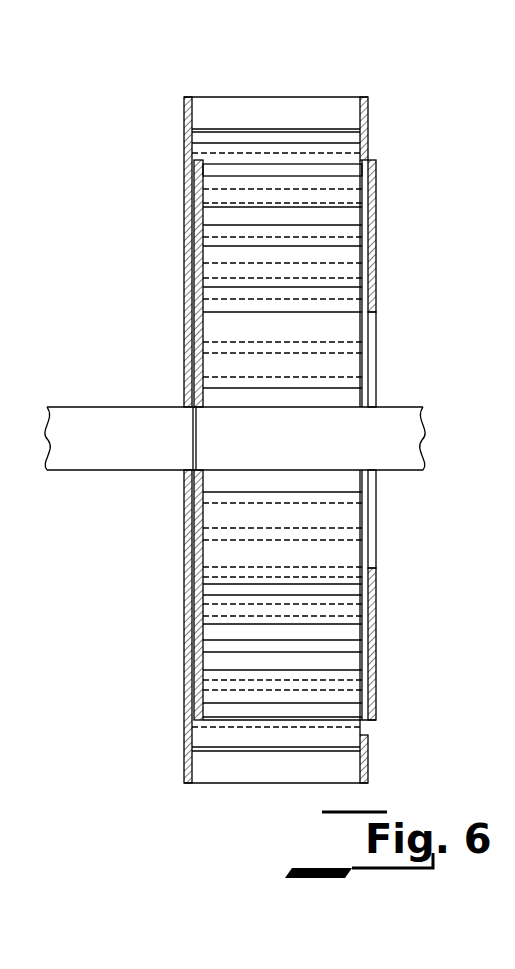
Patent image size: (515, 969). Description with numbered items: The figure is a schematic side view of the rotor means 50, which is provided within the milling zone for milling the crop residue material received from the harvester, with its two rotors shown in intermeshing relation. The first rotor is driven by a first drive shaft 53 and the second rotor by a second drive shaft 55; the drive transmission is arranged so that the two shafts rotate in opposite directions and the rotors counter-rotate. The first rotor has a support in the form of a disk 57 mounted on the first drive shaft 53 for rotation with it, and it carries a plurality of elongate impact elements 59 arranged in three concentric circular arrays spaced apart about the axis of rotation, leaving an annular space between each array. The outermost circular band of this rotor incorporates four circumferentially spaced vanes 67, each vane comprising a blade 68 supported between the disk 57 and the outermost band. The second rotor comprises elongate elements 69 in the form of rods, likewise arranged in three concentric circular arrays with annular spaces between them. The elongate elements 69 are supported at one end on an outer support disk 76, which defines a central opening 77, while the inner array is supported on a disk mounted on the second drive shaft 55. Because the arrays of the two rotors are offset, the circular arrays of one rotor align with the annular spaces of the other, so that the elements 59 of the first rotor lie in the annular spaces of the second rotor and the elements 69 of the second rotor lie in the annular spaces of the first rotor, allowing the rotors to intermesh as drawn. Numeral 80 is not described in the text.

The rotor means 50 is at (275, 88).
The first drive shaft 53 is at (100, 457).
The second drive shaft 55 is at (402, 453).
The disk 57 is at (185, 357).
The elongate impact elements 59 is at (325, 195).
The vanes 67 is at (335, 113).
The blade 68 is at (224, 113).
The elongate elements 69 is at (308, 172).
The outer support disk 76 is at (375, 233).
The central opening 77 is at (375, 385).
The blade row 80 is at (333, 363).